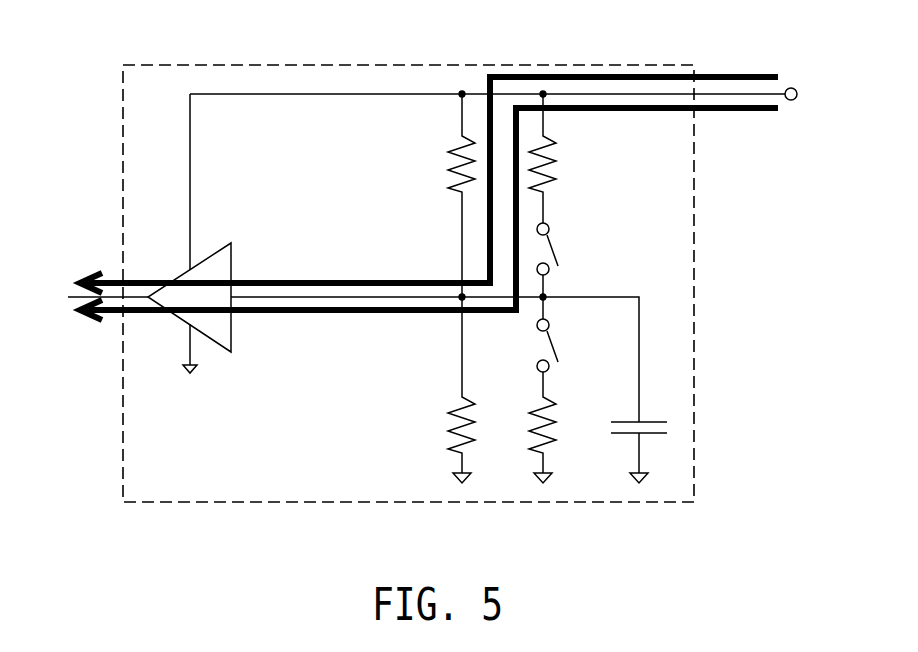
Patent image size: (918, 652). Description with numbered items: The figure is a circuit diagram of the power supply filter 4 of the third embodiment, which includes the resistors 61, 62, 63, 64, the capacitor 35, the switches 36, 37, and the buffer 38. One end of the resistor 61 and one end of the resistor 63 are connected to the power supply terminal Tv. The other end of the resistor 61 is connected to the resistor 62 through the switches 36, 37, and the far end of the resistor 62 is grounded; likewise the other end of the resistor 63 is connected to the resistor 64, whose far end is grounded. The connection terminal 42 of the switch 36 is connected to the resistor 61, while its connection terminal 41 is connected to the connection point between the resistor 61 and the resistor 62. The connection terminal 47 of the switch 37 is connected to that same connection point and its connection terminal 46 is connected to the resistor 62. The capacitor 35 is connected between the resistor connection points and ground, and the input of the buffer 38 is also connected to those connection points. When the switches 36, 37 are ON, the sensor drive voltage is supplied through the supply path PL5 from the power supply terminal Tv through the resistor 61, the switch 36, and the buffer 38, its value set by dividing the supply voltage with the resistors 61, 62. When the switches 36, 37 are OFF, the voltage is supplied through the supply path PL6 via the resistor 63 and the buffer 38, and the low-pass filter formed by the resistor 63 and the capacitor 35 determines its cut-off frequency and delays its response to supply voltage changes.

The power supply filter 4 is at (118, 173).
The buffer 38 is at (207, 254).
The resistor 63 is at (452, 170).
The resistor 64 is at (452, 425).
The resistor 61 is at (555, 172).
The resistor 62 is at (549, 432).
The connection terminal 42 is at (550, 229).
The connection terminal 41 is at (550, 270).
The connection terminal 47 is at (550, 325).
The connection terminal 46 is at (537, 366).
The switch 36 is at (551, 249).
The switch 37 is at (553, 356).
The capacitor 35 is at (650, 420).
The supply path PL6 is at (725, 74).
The supply path PL5 is at (708, 112).
The power supply terminal Tv is at (788, 101).